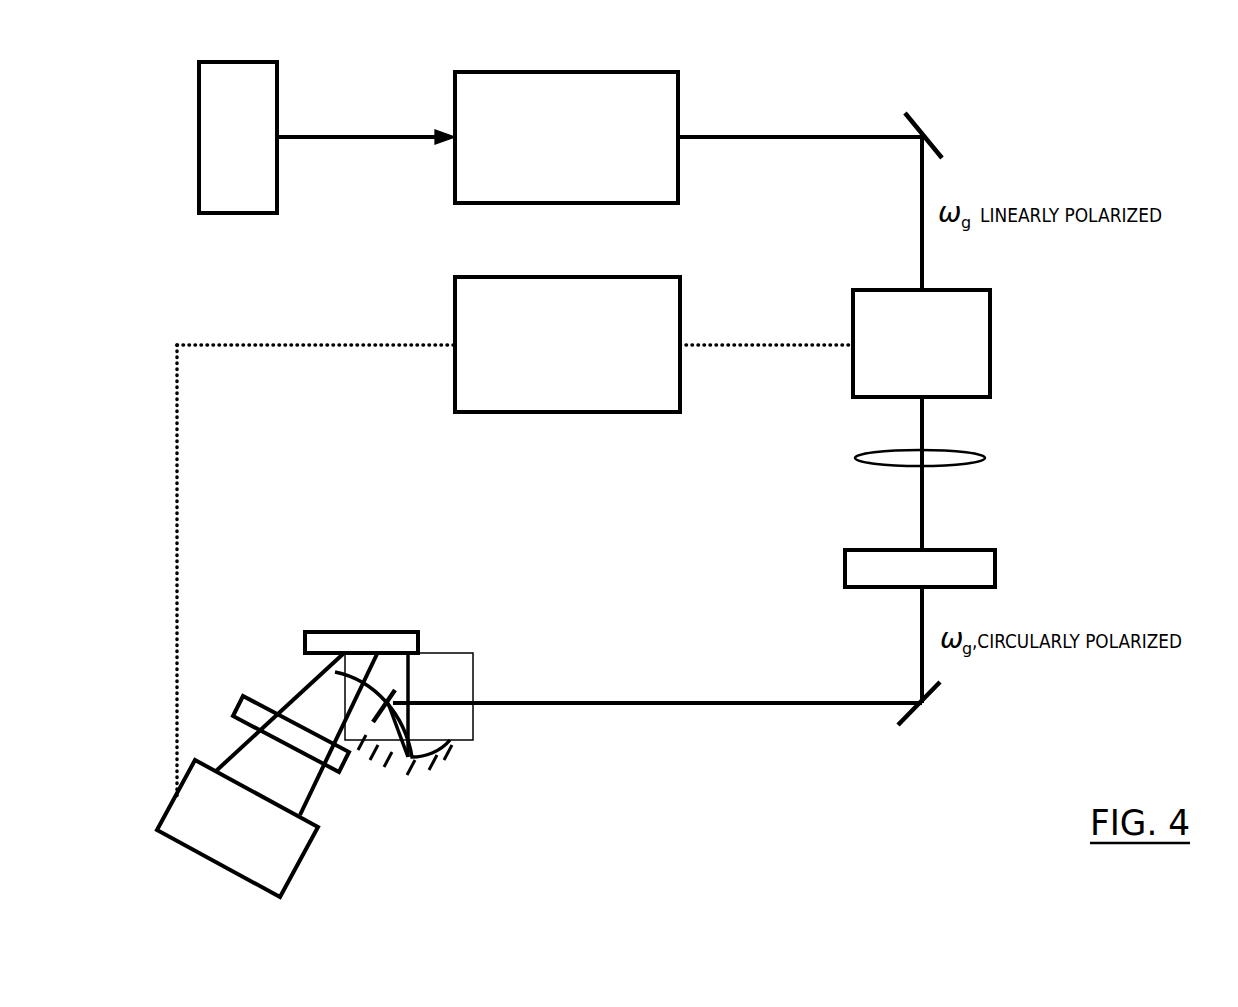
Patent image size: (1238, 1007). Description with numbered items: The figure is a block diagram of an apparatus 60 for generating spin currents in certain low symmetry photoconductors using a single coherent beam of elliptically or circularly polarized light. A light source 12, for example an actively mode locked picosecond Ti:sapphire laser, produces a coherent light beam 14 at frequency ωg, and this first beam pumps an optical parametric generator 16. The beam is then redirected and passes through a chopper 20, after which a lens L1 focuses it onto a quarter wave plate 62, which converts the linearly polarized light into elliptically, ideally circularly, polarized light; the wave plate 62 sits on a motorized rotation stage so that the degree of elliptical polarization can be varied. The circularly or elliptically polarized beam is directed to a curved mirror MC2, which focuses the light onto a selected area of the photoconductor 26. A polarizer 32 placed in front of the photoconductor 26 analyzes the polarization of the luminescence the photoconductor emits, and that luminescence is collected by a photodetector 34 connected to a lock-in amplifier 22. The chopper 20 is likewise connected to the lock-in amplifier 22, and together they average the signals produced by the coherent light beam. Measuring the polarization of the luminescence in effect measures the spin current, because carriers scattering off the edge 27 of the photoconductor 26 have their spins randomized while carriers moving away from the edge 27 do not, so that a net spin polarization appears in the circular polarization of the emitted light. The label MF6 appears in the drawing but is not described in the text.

The light source 12 is at (251, 152).
The optical parametric generator 16 is at (582, 152).
The coherent light beam 14 is at (860, 134).
The apparatus 60 is at (1012, 124).
The chopper 20 is at (936, 358).
The lens L1 is at (945, 452).
The quarter wave plate 62 is at (936, 580).
The lock-in amplifier 22 is at (582, 358).
The photoconductor 26 is at (345, 632).
The edge 27 is at (420, 647).
The focusing mirror MF6 is at (335, 672).
The polarizer 32 is at (347, 767).
The curved mirror MC2 is at (443, 755).
The photodetector 34 is at (253, 845).